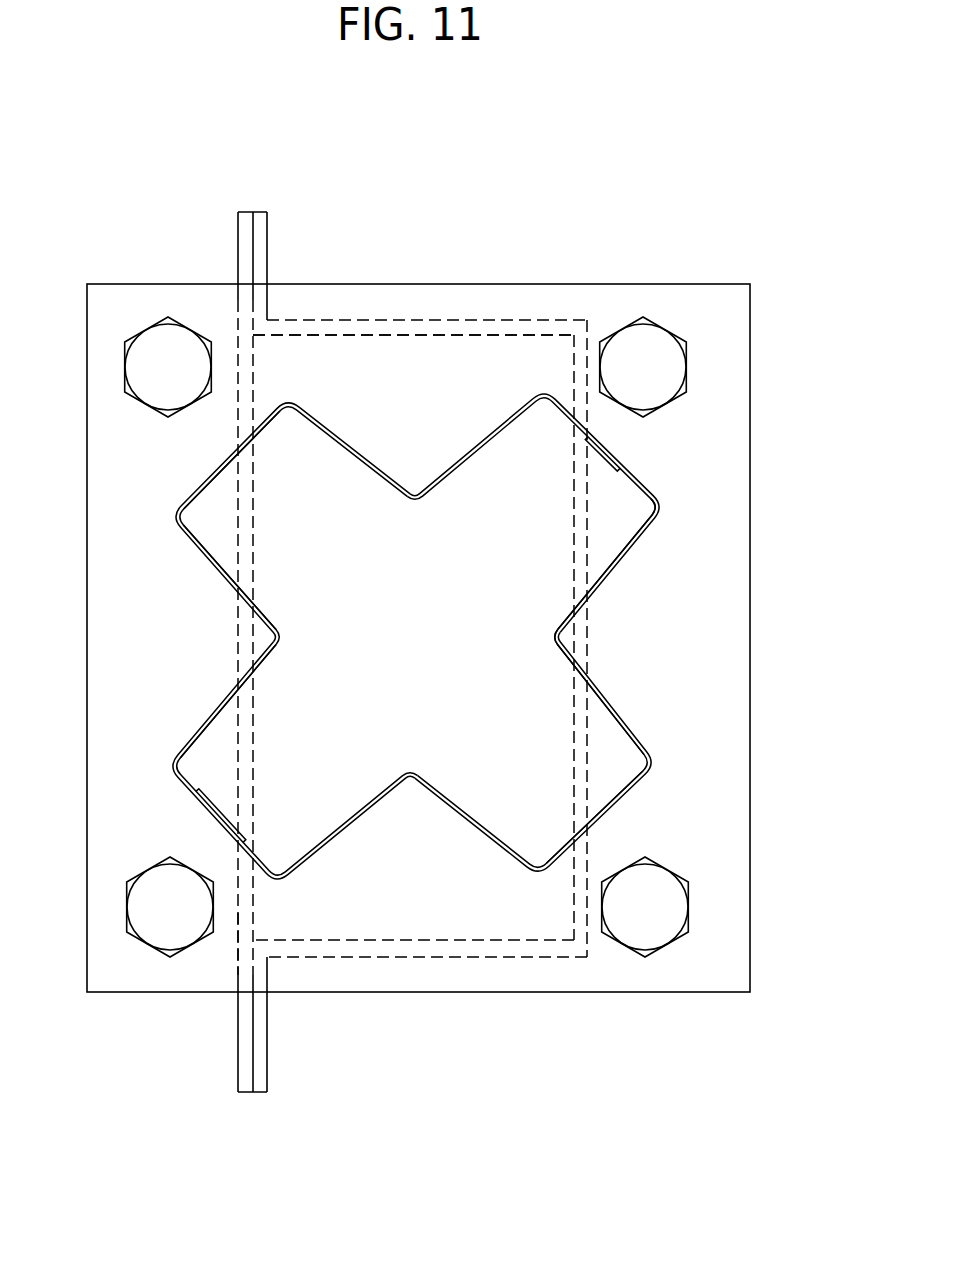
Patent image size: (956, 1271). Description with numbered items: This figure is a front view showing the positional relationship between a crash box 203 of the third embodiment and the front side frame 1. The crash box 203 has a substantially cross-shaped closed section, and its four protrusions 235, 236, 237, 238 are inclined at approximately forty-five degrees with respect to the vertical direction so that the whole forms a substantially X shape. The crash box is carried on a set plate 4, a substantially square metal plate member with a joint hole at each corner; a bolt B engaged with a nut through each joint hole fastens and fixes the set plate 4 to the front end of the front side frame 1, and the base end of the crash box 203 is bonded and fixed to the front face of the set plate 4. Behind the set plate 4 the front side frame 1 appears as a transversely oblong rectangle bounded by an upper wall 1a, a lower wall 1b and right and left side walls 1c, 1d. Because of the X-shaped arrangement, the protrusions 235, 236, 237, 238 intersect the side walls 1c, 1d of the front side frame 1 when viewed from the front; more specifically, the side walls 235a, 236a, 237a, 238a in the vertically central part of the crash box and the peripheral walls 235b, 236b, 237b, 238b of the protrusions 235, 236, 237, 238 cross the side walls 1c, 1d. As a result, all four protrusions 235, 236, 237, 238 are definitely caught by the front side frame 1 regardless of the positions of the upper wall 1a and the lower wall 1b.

The front side frame 1 is at (239, 1042).
The upper wall 1a is at (458, 318).
The lower wall 1b is at (445, 958).
The side wall 1c is at (592, 845).
The side wall 1d is at (238, 913).
The set plate 4 is at (693, 297).
The bolt B is at (123, 357).
The crash box 203 is at (353, 402).
The protrusion 235 is at (665, 513).
The side wall 235a is at (610, 580).
The peripheral wall 235b is at (615, 445).
The protrusion 236 is at (168, 767).
The side wall 236a is at (204, 718).
The peripheral wall 236b is at (186, 787).
The protrusion 237 is at (653, 755).
The side wall 237a is at (610, 703).
The peripheral wall 237b is at (613, 813).
The protrusion 238 is at (180, 493).
The side wall 238a is at (205, 562).
The peripheral wall 238b is at (210, 468).